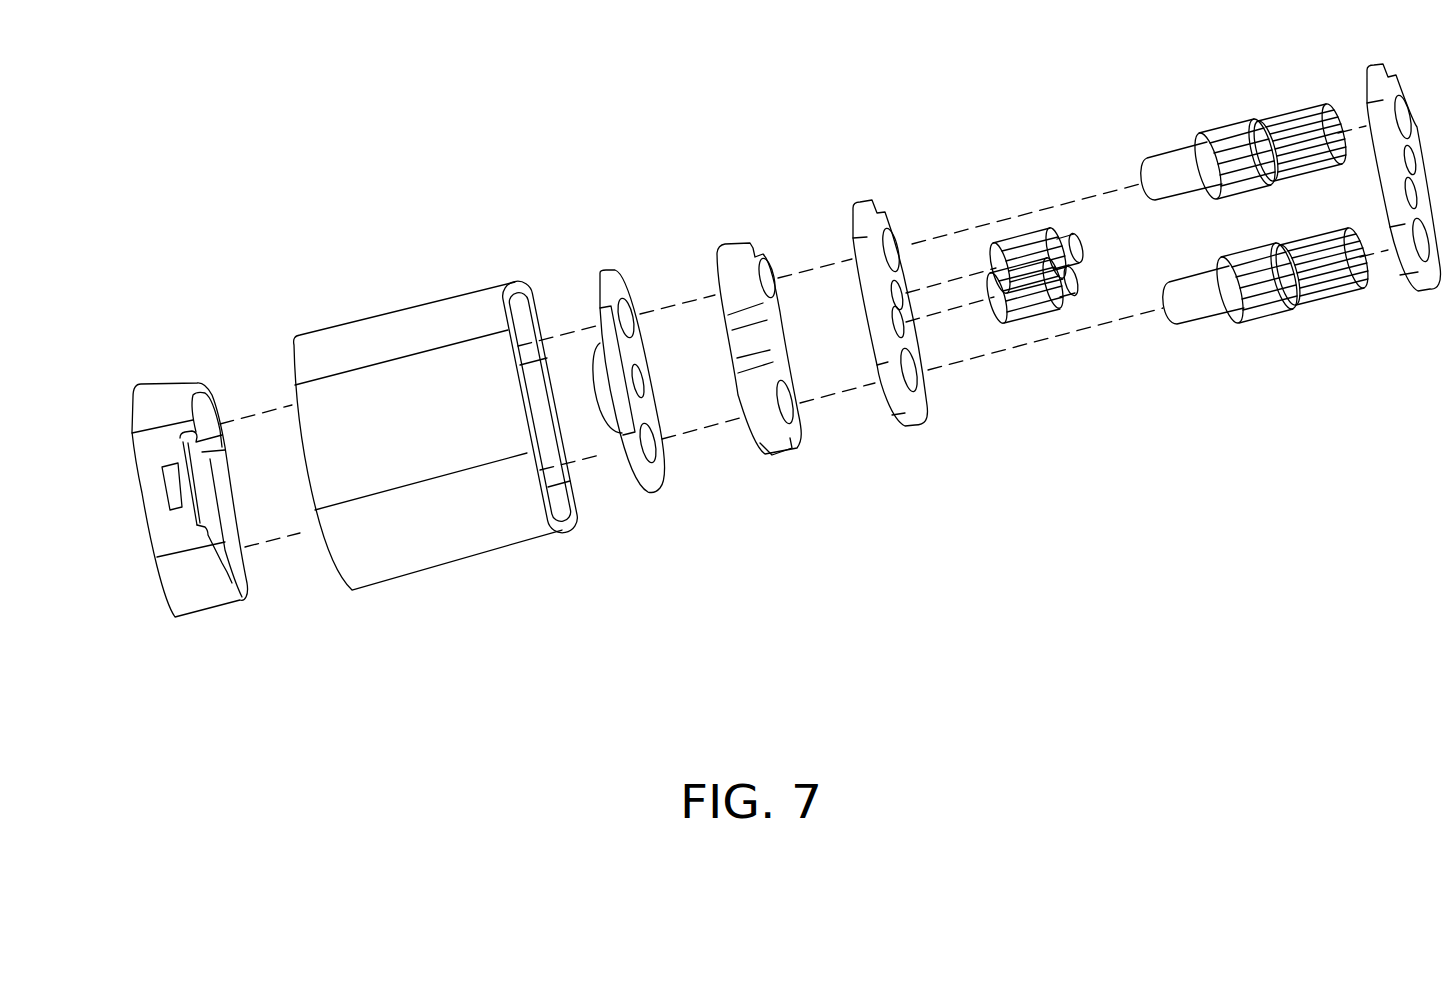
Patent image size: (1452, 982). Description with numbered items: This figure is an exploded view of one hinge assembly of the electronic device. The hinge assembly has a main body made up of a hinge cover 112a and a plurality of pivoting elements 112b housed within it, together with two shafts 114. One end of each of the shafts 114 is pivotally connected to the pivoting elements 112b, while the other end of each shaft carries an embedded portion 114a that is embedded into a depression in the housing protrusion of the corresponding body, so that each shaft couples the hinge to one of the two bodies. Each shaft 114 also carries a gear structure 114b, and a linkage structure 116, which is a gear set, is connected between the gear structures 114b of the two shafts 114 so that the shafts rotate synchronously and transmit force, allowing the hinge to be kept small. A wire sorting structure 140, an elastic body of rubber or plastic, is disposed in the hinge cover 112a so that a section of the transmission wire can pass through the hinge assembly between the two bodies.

The wire sorting structure 140 is at (168, 397).
The hinge cover 112a is at (402, 322).
The pivoting elements 112b is at (1407, 263).
The linkage structure 116 is at (1038, 297).
The shafts 114 is at (1183, 288).
The embedded portion 114a is at (1320, 240).
The gear structure 114b is at (1247, 177).